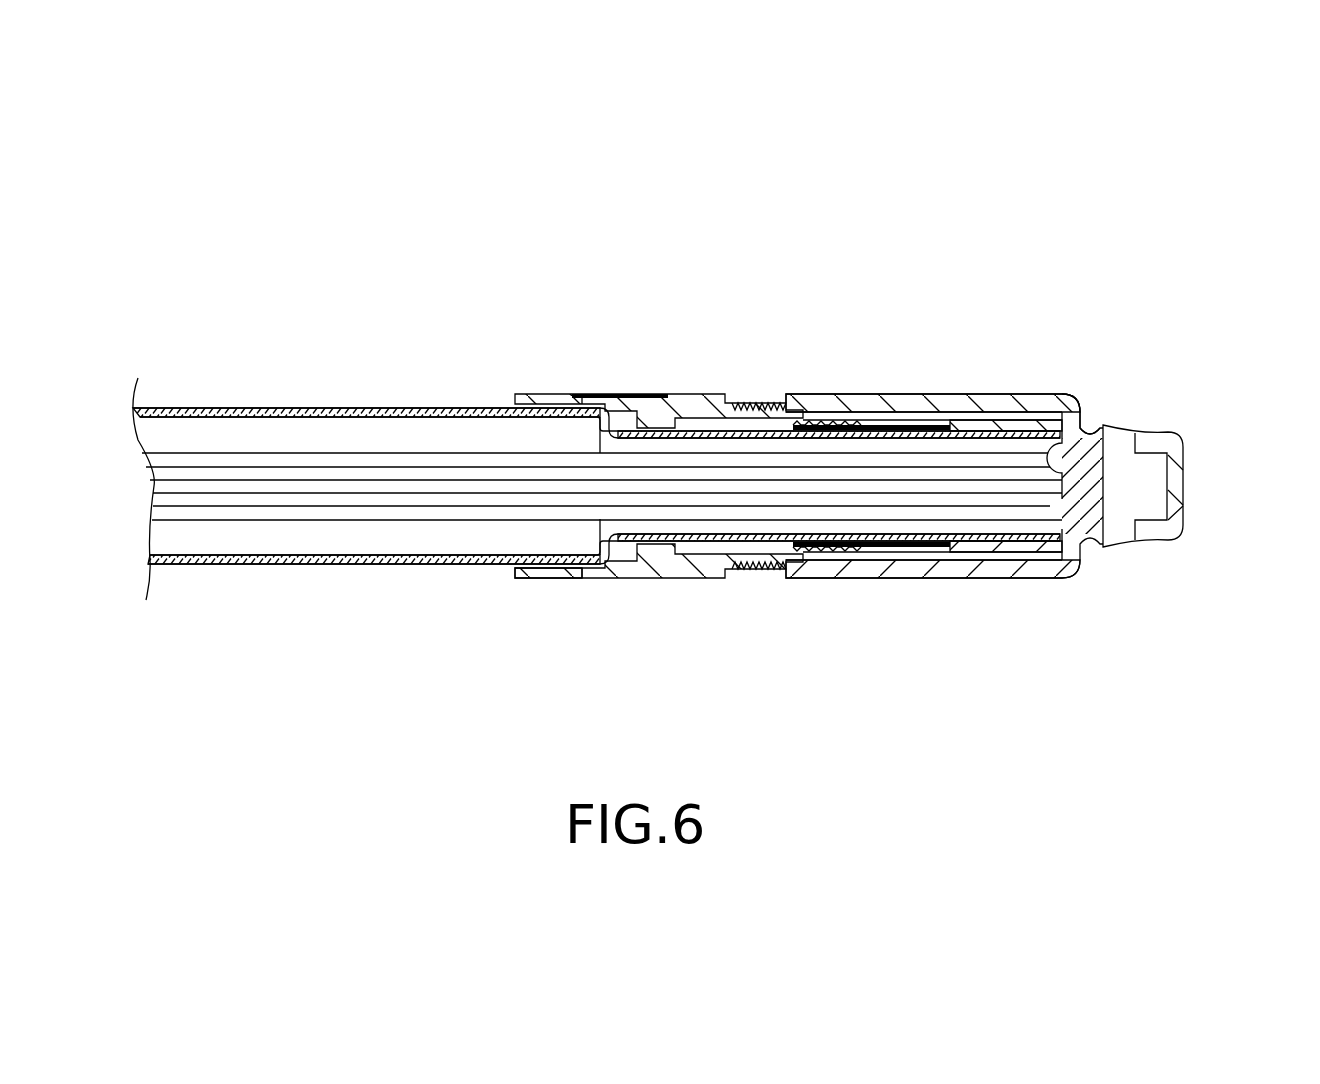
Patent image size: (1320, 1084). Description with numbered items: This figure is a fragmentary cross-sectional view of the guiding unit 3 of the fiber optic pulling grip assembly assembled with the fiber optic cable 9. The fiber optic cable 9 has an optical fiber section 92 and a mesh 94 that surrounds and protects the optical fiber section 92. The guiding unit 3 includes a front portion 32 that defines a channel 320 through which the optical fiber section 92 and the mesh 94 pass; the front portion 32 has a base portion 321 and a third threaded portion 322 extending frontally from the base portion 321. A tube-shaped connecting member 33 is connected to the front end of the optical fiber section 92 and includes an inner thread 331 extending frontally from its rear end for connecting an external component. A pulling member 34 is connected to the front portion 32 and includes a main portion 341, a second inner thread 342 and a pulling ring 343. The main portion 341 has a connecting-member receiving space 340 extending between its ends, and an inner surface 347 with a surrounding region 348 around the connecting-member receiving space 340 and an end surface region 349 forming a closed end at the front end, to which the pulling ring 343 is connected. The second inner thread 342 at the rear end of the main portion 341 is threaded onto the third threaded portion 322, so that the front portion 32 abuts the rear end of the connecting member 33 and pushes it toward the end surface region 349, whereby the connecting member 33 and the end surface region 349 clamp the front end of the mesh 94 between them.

The guiding unit 3 is at (912, 278).
The fiber optic cable 9 is at (280, 592).
The optical fiber section 92 is at (410, 438).
The mesh 94 is at (398, 566).
The front portion 32 is at (634, 370).
The channel 320 is at (525, 550).
The base portion 321 is at (632, 580).
The third threaded portion 322 is at (752, 578).
The second inner thread 342 is at (742, 398).
The inner thread 331 is at (828, 412).
The connecting member 33 is at (964, 400).
The surrounding region 348 is at (897, 400).
The inner surface 347 is at (1031, 388).
The end surface region 349 is at (1050, 455).
The pulling ring 343 is at (1178, 468).
The pulling member 34 is at (1004, 594).
The connecting-member receiving space 340 is at (876, 580).
The main portion 341 is at (926, 580).